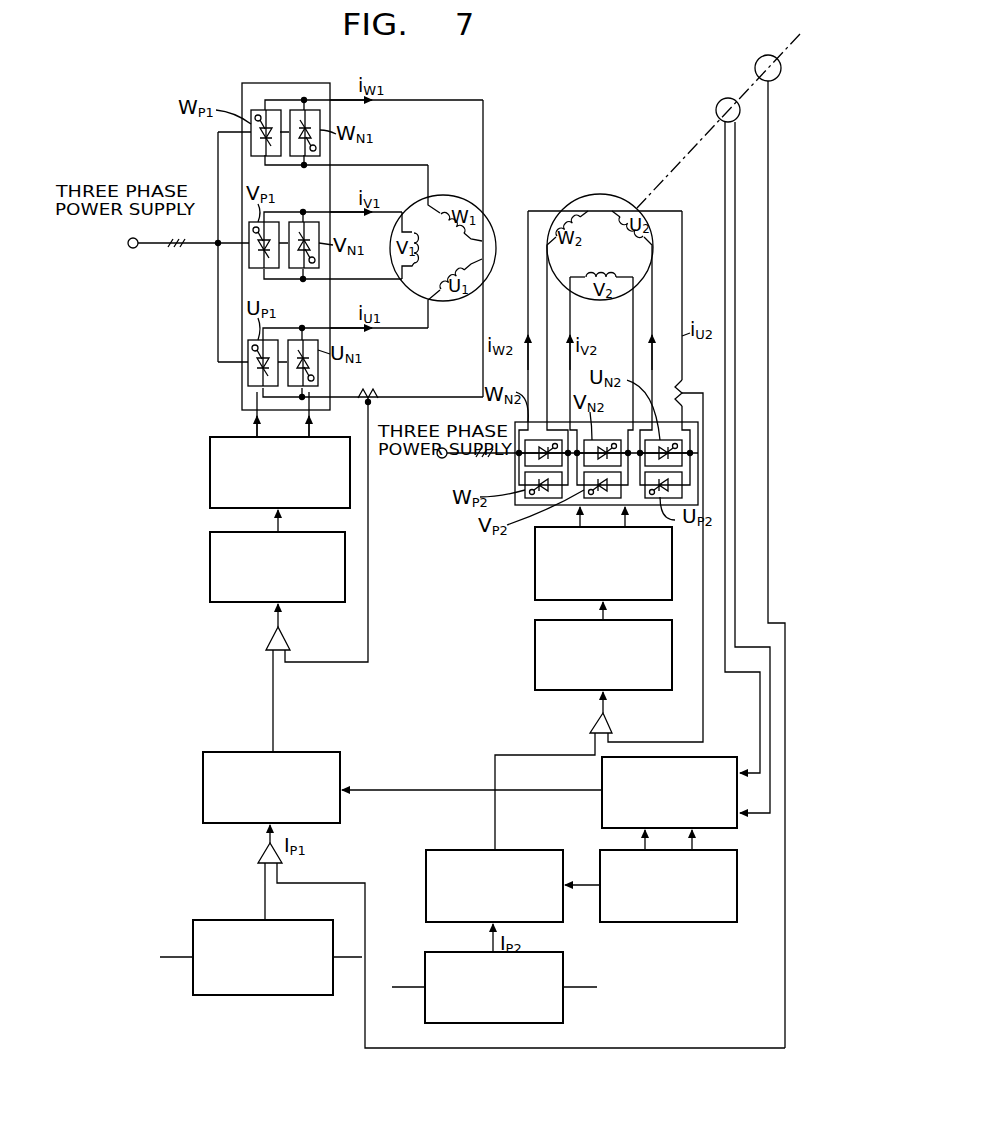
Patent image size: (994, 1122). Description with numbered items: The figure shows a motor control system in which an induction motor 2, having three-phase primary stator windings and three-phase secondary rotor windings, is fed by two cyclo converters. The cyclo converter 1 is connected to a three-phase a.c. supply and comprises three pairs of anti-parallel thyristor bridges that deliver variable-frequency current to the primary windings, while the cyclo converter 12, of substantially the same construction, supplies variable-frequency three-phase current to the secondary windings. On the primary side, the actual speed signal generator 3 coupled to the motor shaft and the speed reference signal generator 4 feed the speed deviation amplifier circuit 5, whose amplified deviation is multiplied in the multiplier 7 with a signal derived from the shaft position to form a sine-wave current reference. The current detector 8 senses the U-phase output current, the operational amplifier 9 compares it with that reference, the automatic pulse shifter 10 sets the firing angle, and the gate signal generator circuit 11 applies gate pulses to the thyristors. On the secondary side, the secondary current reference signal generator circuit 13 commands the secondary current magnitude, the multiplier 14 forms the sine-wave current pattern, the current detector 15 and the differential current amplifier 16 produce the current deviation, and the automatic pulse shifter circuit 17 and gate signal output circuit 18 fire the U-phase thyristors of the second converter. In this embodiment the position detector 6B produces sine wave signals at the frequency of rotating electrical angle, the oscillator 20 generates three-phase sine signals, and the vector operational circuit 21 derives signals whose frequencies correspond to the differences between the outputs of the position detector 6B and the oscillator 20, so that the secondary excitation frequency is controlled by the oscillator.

The cyclo converter 1 is at (290, 83).
The induction motor 2 is at (443, 195).
The actual speed signal generator 3 is at (755, 65).
The speed reference signal generator circuit 4 is at (193, 929).
The speed deviation amplifier circuit 5 is at (258, 856).
The position detector 6B is at (716, 110).
The multiplier 7 is at (203, 790).
The current detector 8 is at (368, 392).
The operational amplifier 9 is at (266, 641).
The automatic pulse shifter 10 is at (210, 569).
The gate signal generator circuit 11 is at (210, 467).
The cyclo converter 12 is at (698, 453).
The secondary current reference signal generator circuit 13 is at (425, 972).
The multiplier 14 is at (426, 881).
The current detector 15 is at (688, 387).
The differential current amplifier 16 is at (590, 724).
The automatic pulse shifter circuit 17 is at (535, 650).
The gate signal output circuit 18 is at (535, 575).
The oscillator 20 is at (737, 862).
The vector operational circuit 21 is at (725, 757).